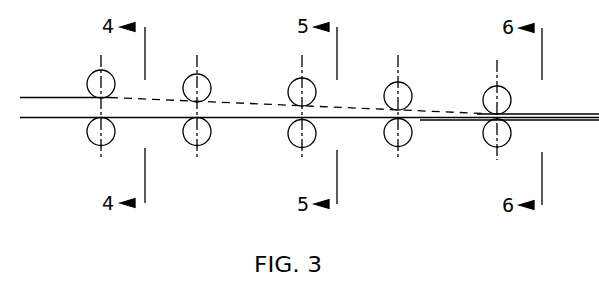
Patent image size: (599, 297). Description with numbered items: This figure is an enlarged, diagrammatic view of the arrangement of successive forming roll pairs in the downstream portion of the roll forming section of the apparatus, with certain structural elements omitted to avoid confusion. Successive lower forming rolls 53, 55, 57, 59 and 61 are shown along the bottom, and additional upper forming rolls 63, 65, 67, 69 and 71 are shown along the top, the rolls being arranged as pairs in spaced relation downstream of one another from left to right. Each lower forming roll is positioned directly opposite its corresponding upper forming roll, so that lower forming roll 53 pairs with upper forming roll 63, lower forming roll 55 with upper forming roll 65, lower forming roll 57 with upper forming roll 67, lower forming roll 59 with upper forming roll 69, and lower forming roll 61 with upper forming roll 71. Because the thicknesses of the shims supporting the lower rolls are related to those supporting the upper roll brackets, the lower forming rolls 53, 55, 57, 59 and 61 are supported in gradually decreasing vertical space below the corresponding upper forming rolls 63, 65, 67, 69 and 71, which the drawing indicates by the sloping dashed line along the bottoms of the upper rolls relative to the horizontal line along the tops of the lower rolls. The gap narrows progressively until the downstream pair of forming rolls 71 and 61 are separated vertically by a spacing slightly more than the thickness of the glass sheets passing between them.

The lower forming roll 53 is at (90, 141).
The lower forming roll 55 is at (185, 142).
The lower forming roll 57 is at (291, 141).
The lower forming roll 59 is at (388, 140).
The lower forming roll 61 is at (487, 141).
The upper forming roll 63 is at (92, 77).
The upper forming roll 65 is at (207, 80).
The upper forming roll 67 is at (296, 82).
The upper forming roll 69 is at (389, 85).
The upper forming roll 71 is at (486, 89).